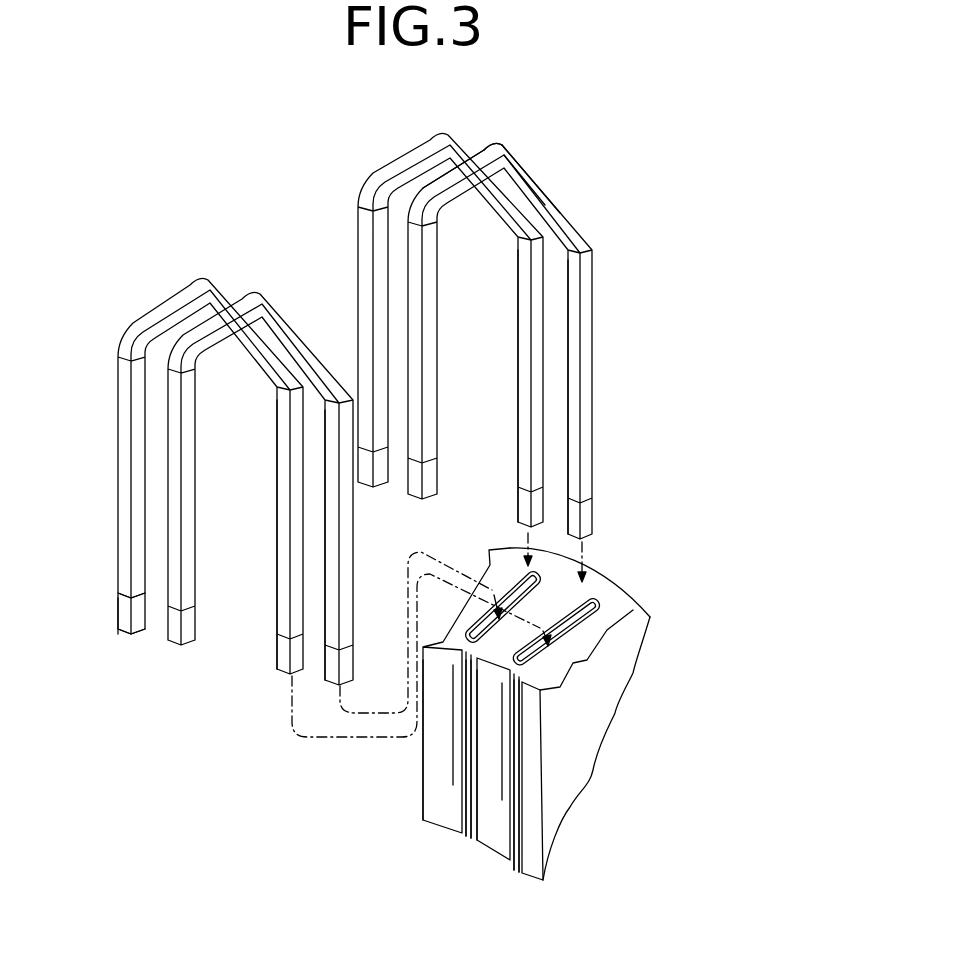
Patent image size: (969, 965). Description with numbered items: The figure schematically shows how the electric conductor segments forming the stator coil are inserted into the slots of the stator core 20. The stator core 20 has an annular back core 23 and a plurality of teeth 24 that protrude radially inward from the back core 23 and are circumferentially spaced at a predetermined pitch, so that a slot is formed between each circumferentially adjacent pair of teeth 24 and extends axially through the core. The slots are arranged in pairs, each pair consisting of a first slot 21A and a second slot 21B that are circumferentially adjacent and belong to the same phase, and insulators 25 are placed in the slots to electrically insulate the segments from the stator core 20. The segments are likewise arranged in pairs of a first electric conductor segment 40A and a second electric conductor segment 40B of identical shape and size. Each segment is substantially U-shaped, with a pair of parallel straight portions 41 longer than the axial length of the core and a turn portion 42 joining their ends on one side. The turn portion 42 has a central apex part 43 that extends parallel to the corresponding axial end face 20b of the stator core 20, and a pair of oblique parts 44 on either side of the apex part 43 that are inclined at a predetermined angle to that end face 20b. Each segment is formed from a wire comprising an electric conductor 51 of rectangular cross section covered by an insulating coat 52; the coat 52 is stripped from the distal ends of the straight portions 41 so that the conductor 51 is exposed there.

The stator core 20 is at (558, 726).
The axial end face 20b is at (627, 605).
The first slot 21A is at (524, 812).
The second slot 21B is at (470, 800).
The back core 23 is at (633, 643).
The teeth 24 is at (437, 803).
The insulators 25 is at (556, 632).
The first electric conductor segment 40A is at (292, 310).
The second electric conductor segment 40B is at (168, 307).
The straight portions 41 is at (533, 402).
The turn portion 42 is at (537, 180).
The apex part 43 is at (502, 143).
The oblique parts 44 is at (478, 152).
The electric conductor 51 is at (120, 613).
The insulating coat 52 is at (120, 571).